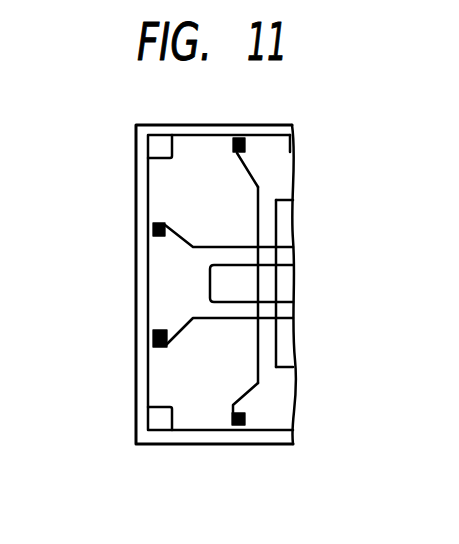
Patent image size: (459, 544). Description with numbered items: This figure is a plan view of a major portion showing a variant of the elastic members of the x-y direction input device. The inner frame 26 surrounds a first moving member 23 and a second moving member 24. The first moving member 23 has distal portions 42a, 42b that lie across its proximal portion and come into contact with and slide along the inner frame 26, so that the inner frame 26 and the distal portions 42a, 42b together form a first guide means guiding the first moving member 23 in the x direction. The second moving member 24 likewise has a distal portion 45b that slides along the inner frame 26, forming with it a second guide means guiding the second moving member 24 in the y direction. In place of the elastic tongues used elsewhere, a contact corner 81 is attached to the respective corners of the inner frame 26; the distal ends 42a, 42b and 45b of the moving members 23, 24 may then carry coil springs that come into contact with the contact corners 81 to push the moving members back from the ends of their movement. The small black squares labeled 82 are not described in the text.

The first moving member 23 is at (295, 190).
The second moving member 24 is at (295, 257).
The inner frame 26 is at (138, 202).
The distal portion 42a is at (282, 150).
The distal portion 42b is at (282, 415).
The distal portion 45b is at (162, 287).
The contact corner 81 is at (163, 150).
The spot weld 82 is at (233, 145).